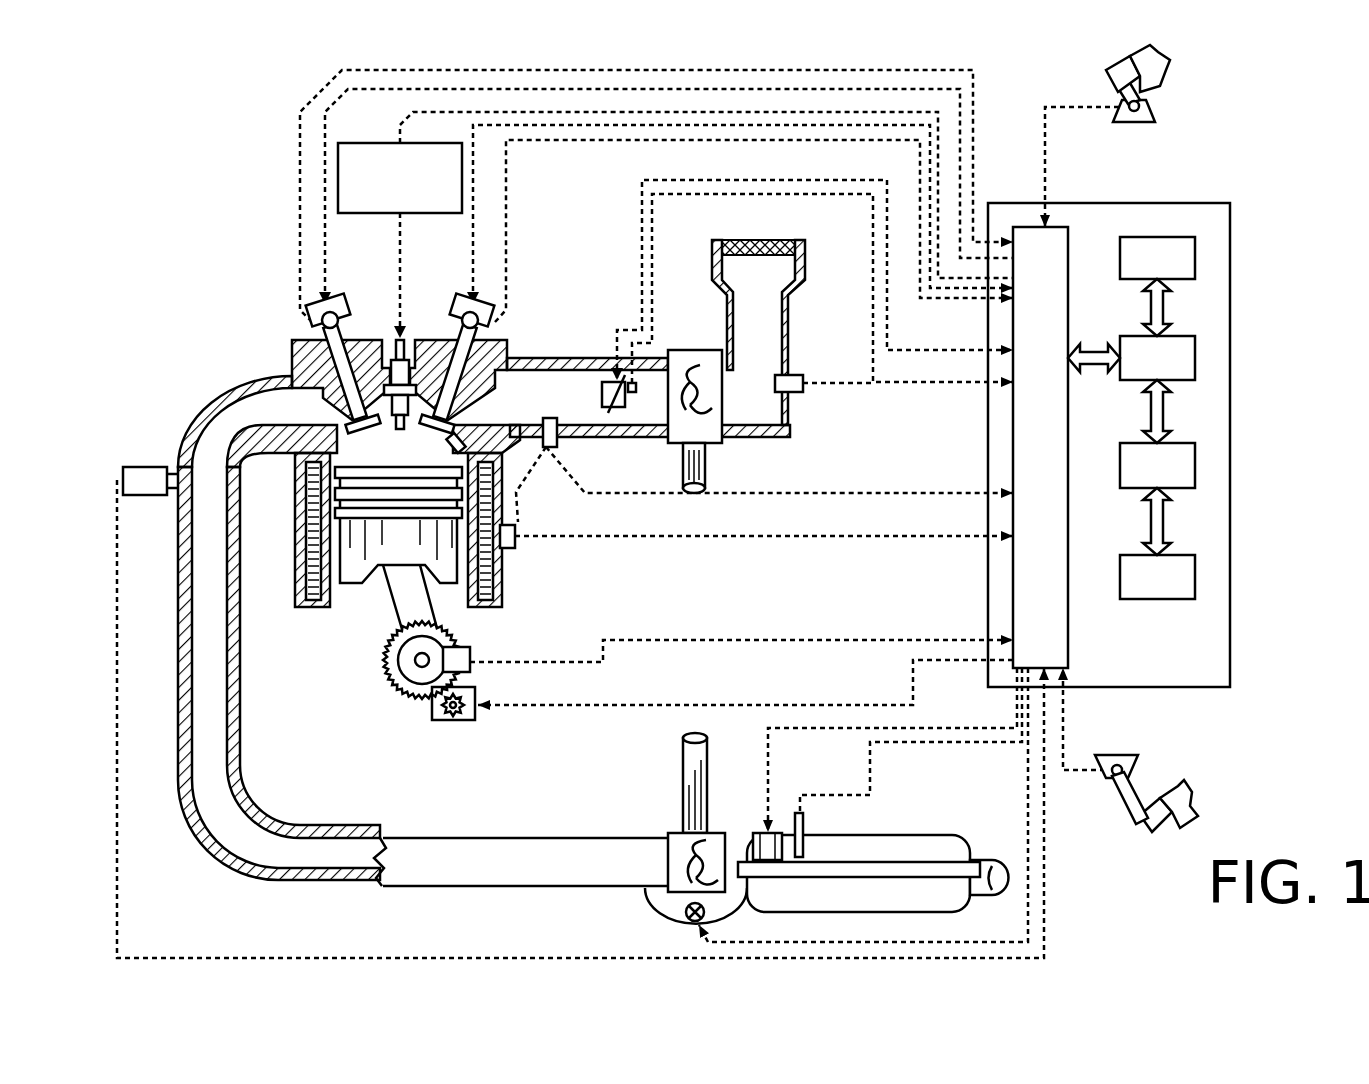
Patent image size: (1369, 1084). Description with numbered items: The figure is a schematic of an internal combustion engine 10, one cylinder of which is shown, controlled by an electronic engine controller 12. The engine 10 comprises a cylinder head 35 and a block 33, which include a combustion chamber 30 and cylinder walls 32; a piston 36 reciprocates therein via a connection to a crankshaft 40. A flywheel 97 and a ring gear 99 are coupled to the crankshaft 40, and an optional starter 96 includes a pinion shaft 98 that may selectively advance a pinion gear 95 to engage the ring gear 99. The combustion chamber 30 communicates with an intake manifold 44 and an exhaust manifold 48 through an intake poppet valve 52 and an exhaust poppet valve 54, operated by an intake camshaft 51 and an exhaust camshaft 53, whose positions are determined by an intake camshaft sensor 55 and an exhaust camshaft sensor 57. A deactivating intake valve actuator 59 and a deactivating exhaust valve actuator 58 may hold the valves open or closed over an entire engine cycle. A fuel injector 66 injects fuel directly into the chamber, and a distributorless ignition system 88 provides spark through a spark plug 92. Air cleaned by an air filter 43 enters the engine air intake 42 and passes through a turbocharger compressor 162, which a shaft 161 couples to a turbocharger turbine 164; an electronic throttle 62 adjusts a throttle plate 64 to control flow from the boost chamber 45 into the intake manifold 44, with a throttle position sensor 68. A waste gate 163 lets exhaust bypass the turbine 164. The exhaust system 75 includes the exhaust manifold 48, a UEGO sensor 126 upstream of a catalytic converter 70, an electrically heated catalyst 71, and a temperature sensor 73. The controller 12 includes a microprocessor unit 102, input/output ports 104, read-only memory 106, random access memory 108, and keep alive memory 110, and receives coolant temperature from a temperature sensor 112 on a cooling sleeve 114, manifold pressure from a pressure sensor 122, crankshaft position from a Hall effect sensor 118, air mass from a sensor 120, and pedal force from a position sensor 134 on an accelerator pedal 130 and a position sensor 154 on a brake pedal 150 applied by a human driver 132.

The internal combustion engine 10 is at (228, 292).
The electronic engine controller 12 is at (1222, 205).
The combustion chamber 30 is at (398, 449).
The cylinder walls 32 is at (343, 602).
The block 33 is at (292, 490).
The cylinder head 35 is at (290, 338).
The piston 36 is at (379, 583).
The crankshaft 40 is at (414, 690).
The engine air intake 42 is at (808, 244).
The air filter 43 is at (780, 252).
The intake manifold 44 is at (509, 412).
The boost chamber 45 is at (634, 412).
The exhaust manifold 48 is at (244, 419).
The intake camshaft 51 is at (462, 322).
The intake poppet valve 52 is at (445, 400).
The exhaust camshaft 53 is at (315, 318).
The exhaust poppet valve 54 is at (290, 384).
The intake camshaft sensor 55 is at (478, 318).
The exhaust camshaft sensor 57 is at (318, 322).
The deactivating exhaust valve actuator 58 is at (345, 330).
The deactivating intake valve actuator 59 is at (466, 330).
The electronic throttle 62 is at (606, 393).
The throttle plate 64 is at (608, 413).
The fuel injector 66 is at (460, 447).
The throttle position sensor 68 is at (638, 383).
The catalytic converter 70 is at (915, 838).
The electrically heated catalyst 71 is at (770, 828).
The temperature sensor 73 is at (802, 822).
The exhaust system 75 is at (172, 438).
The distributorless ignition system 88 is at (356, 143).
The spark plug 92 is at (404, 343).
The pinion gear 95 is at (459, 722).
The starter 96 is at (466, 718).
The flywheel 97 is at (392, 655).
The pinion shaft 98 is at (443, 722).
The ring gear 99 is at (420, 702).
The microprocessor unit 102 is at (1195, 362).
The input/output ports 104 is at (1068, 236).
The read-only memory 106 is at (1195, 257).
The random access memory 108 is at (1195, 470).
The keep alive memory 110 is at (1195, 580).
The temperature sensor 112 is at (516, 528).
The cooling sleeve 114 is at (483, 552).
The Hall effect sensor 118 is at (470, 650).
The air mass sensor 120 is at (802, 376).
The pressure sensor 122 is at (543, 452).
The Universal Exhaust Gas Oxygen sensor 126 is at (123, 470).
The accelerator pedal 130 is at (1110, 82).
The human driver 132 is at (1168, 66).
The position sensor 134 is at (1150, 108).
The brake pedal 150 is at (1142, 816).
The position sensor 154 is at (1105, 772).
The shaft 161 is at (706, 455).
The turbocharger compressor 162 is at (722, 425).
The waste gate 163 is at (692, 922).
The turbocharger turbine 164 is at (670, 833).